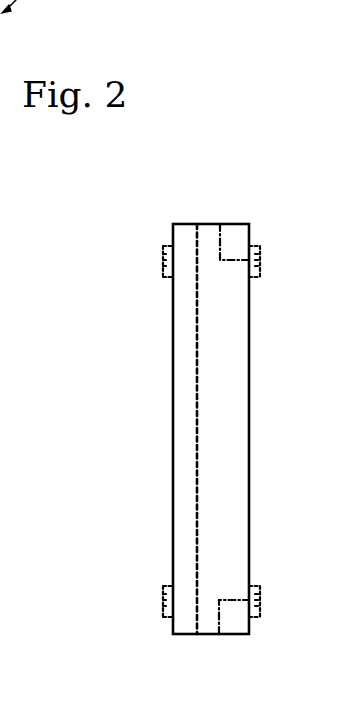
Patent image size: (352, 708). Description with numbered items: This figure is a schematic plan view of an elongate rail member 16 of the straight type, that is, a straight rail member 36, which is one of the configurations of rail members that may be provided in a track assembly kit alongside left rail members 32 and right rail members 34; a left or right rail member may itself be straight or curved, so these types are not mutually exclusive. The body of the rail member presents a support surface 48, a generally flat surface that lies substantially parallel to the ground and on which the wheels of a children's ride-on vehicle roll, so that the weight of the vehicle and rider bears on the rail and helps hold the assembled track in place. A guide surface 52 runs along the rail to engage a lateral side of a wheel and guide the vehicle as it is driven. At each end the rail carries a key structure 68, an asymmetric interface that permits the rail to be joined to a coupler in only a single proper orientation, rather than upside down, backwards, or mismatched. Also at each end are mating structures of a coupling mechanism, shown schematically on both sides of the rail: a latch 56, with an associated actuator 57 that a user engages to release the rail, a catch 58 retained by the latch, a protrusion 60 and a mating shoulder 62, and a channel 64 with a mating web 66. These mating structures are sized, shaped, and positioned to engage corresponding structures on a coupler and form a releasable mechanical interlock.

The elongate rail member 16 is at (70, 148).
The left rail member 32 is at (62, 266).
The right rail member 34 is at (56, 305).
The straight rail member 36 is at (76, 194).
The support surface 48 is at (185, 440).
The guide surface 52 is at (198, 340).
The latch 56 is at (162, 245).
The actuator 57 is at (163, 247).
The catch 58 is at (163, 253).
The protrusion 60 is at (163, 260).
The shoulder 62 is at (163, 266).
The channel 64 is at (163, 275).
The web 66 is at (162, 278).
The key structure 68 is at (232, 224).